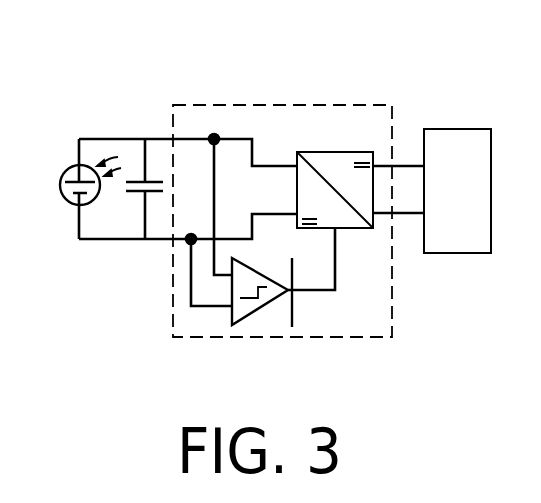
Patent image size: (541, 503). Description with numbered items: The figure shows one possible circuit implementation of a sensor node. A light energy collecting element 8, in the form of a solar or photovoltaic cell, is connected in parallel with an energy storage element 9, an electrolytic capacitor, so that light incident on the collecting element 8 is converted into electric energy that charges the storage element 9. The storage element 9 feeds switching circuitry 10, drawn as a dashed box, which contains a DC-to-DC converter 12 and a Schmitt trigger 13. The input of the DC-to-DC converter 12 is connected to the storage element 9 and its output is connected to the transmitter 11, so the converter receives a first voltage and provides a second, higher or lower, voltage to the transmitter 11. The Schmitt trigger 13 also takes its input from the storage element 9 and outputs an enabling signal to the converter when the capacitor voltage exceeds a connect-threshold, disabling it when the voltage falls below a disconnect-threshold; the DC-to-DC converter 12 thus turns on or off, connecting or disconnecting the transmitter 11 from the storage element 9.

The light energy collecting element 8 is at (61, 147).
The energy storage element 9 is at (131, 159).
The switching circuitry 10 is at (245, 105).
The transmitter 11 is at (460, 129).
The DC-to-DC converter 12 is at (345, 152).
The Schmitt trigger 13 is at (219, 340).